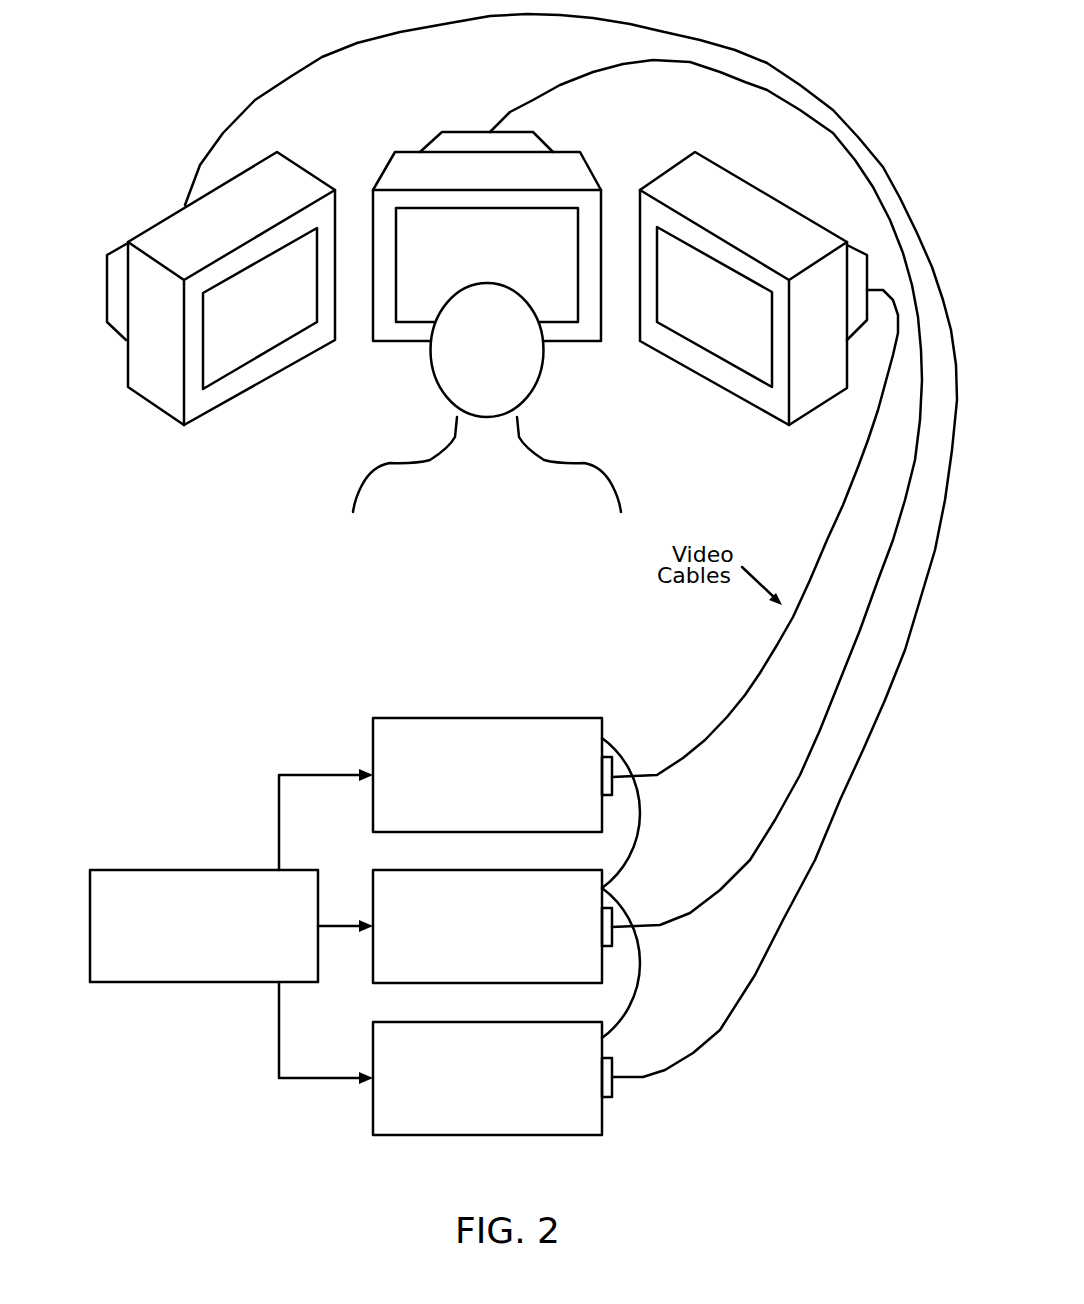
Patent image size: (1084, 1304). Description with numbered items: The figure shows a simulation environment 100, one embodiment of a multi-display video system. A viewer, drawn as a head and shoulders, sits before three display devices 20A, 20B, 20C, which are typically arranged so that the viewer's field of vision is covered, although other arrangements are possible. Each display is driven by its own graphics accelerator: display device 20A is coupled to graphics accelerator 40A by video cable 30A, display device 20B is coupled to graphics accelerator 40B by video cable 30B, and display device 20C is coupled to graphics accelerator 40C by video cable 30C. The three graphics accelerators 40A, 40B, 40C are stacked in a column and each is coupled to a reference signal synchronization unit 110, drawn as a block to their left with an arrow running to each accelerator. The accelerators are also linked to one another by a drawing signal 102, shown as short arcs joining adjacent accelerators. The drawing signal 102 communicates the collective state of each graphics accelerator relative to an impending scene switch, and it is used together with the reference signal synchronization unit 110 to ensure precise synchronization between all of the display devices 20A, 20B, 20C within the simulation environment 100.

The simulation environment 100 is at (203, 65).
The display device 20A is at (259, 387).
The display device 20B is at (563, 342).
The display device 20C is at (715, 387).
The video cable 30A is at (697, 1048).
The video cable 30B is at (695, 907).
The video cable 30C is at (697, 748).
The graphics accelerator 40A is at (492, 1078).
The graphics accelerator 40B is at (492, 926).
The graphics accelerator 40C is at (492, 775).
The drawing signal 102 is at (621, 748).
The reference signal synchronization unit 110 is at (231, 926).